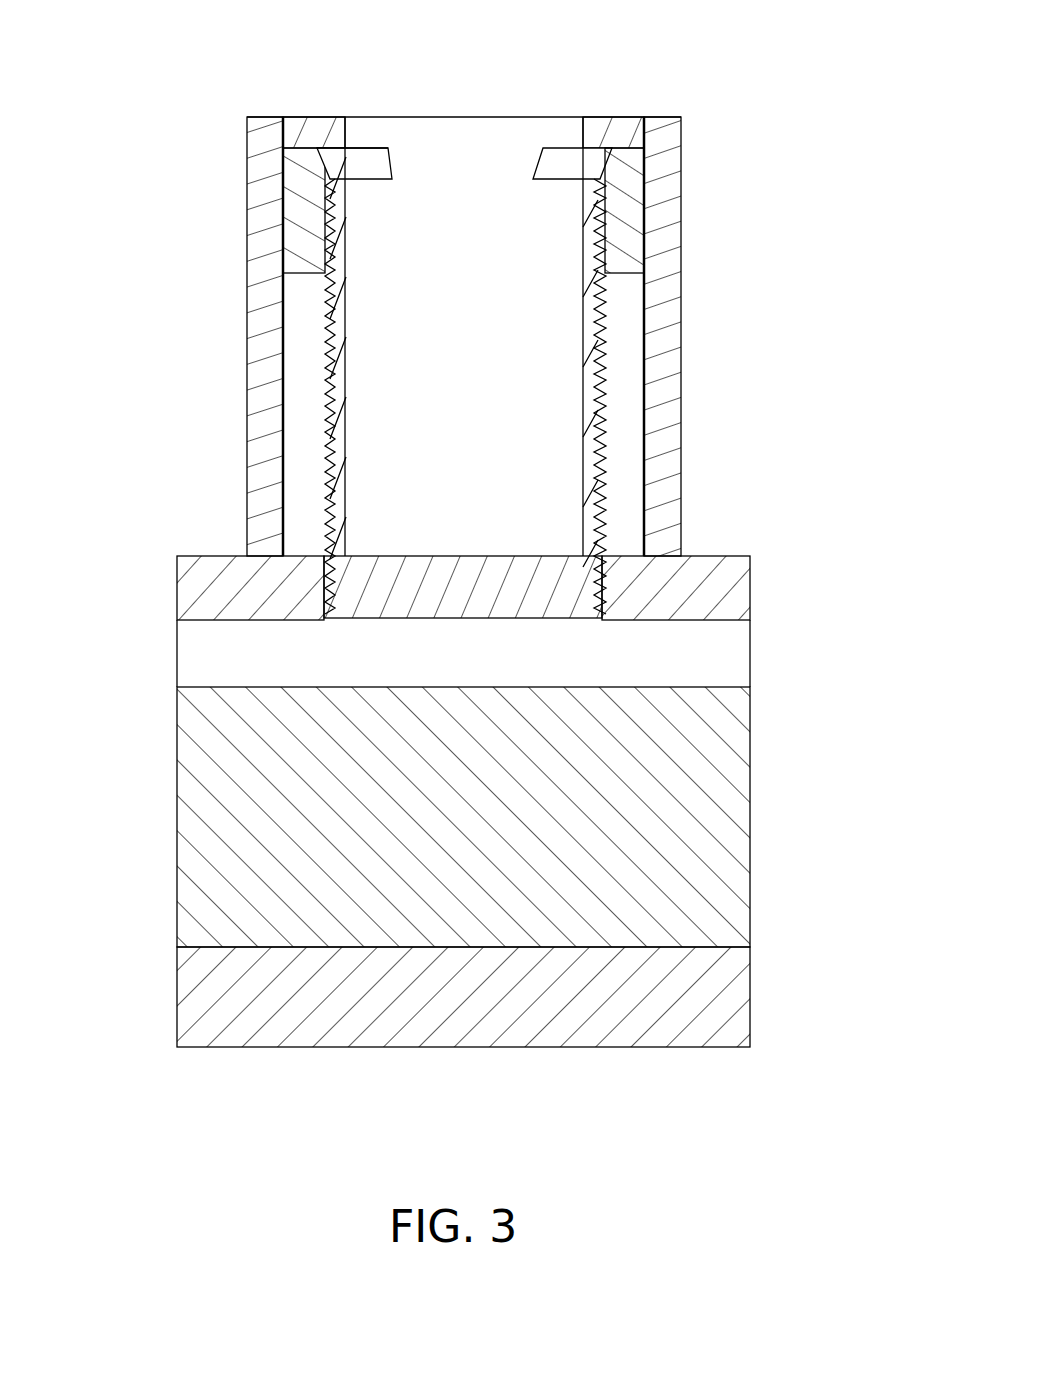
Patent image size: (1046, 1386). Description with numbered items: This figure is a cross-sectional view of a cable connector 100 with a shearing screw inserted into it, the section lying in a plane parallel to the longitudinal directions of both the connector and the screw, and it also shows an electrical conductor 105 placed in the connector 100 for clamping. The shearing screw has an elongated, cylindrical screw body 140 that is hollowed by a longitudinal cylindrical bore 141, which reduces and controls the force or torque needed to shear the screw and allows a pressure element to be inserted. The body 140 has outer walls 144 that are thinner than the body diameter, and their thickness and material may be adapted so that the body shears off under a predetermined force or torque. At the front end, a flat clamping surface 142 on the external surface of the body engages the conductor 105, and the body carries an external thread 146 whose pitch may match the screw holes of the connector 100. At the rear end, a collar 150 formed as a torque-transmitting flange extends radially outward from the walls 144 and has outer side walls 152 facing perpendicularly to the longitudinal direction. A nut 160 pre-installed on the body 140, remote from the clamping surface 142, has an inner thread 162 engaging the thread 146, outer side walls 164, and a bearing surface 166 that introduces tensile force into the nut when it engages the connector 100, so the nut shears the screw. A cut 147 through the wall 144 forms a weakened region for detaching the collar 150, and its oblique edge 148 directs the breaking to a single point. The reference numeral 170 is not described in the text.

The cable connector 100 is at (694, 975).
The electrical conductor 105 is at (203, 862).
The screw body 140 is at (563, 592).
The longitudinal cylindrical bore 141 is at (527, 467).
The clamping surface 142 is at (407, 624).
The outer walls 144 is at (588, 532).
The external thread 146 is at (330, 416).
The cut 147 is at (368, 160).
The oblique edge 148 is at (396, 160).
The collar 150 is at (305, 131).
The outer side walls 152 is at (648, 134).
The nut 160 is at (303, 209).
The inner thread 162 is at (598, 161).
The outer side walls 164 is at (648, 215).
The bearing surface 166 is at (622, 278).
The sleeve wall 170 is at (260, 292).